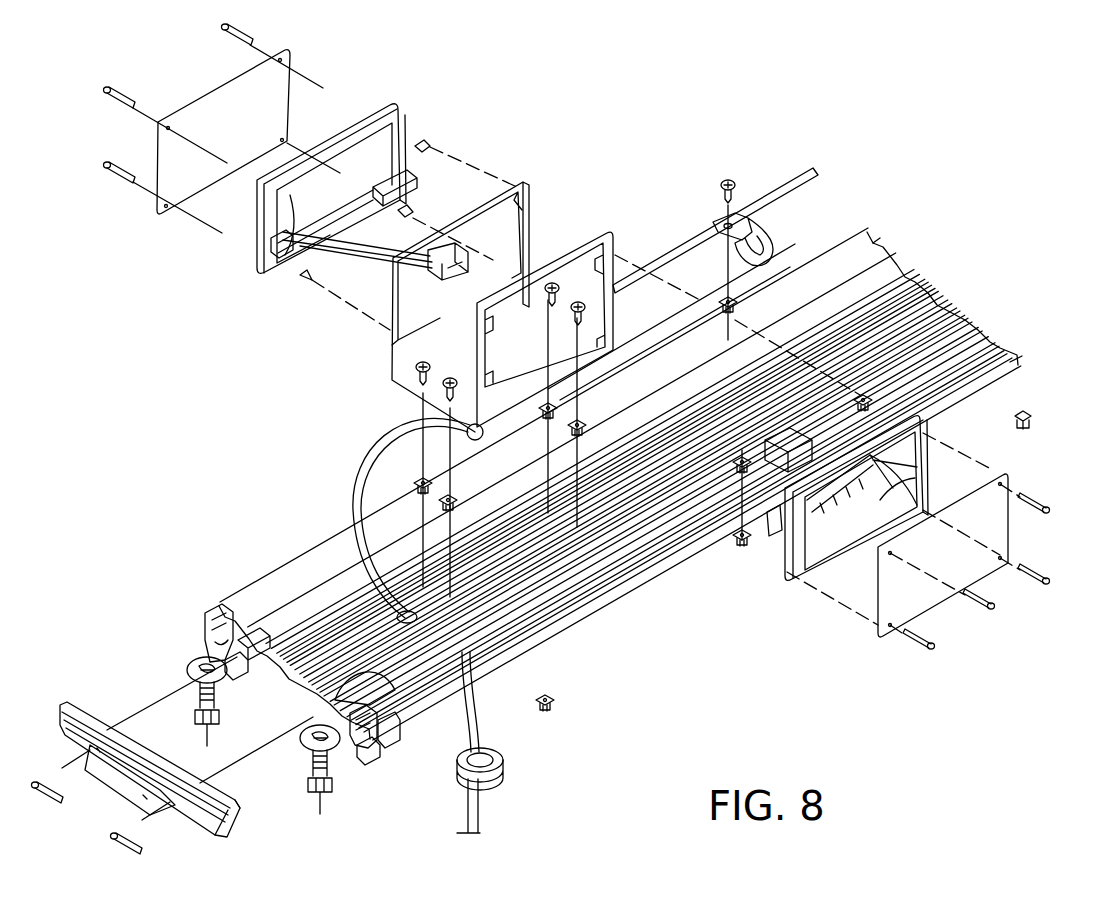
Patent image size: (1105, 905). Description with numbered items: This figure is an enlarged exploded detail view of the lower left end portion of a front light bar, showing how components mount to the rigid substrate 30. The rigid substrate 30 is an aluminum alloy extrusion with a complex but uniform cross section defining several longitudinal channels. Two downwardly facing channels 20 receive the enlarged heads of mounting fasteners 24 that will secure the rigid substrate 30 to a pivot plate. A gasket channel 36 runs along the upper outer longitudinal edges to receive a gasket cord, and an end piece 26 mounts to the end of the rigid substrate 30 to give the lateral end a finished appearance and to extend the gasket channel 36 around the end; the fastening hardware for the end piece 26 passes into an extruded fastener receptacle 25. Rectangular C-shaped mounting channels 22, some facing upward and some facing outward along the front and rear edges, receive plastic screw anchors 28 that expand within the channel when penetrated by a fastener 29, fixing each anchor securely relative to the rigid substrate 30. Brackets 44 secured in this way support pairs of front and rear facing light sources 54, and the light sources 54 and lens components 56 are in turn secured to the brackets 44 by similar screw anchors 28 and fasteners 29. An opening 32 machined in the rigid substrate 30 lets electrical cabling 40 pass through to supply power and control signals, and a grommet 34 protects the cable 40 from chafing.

The downwardly facing channel 20 is at (362, 760).
The C-shaped mounting channel 22 is at (1004, 347).
The mounting fastener 24 is at (305, 770).
The extruded fastener receptacle 25 is at (400, 700).
The end piece 26 is at (108, 785).
The plastic screw anchor 28 is at (1033, 437).
The fastener 29 is at (937, 650).
The rigid substrate 30 is at (600, 600).
The opening 32 is at (477, 670).
The grommet 34 is at (503, 780).
The gasket channel 36 is at (385, 745).
The electrical cabling 40 is at (680, 242).
The bracket 44 is at (387, 330).
The light source 54 is at (843, 557).
The lens component 56 is at (993, 580).